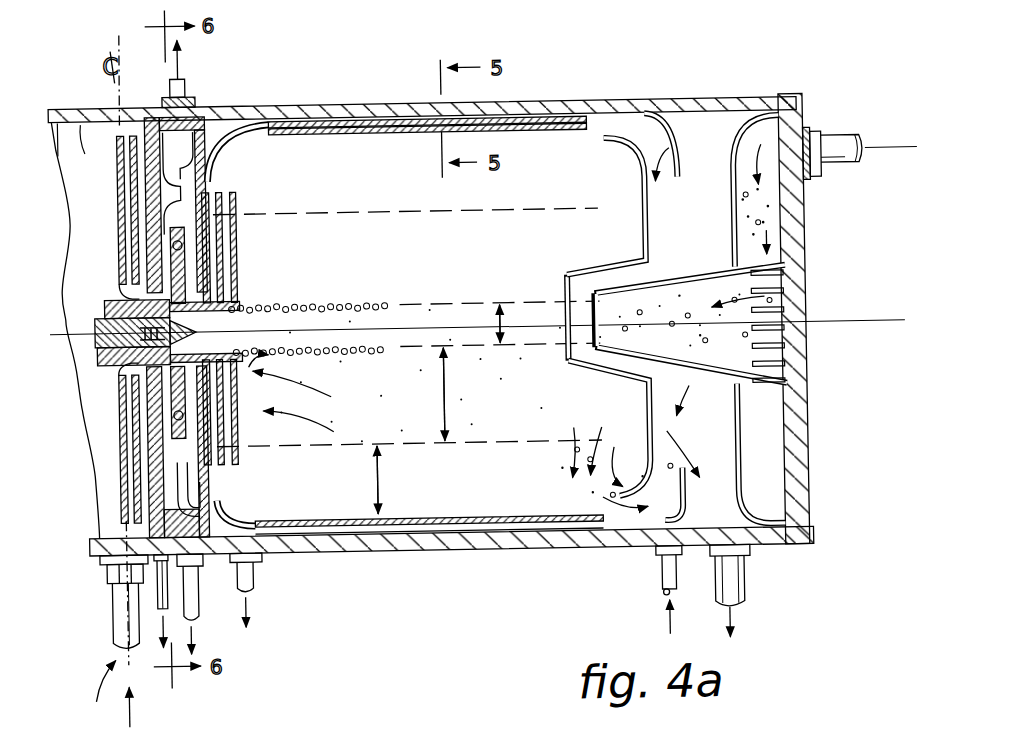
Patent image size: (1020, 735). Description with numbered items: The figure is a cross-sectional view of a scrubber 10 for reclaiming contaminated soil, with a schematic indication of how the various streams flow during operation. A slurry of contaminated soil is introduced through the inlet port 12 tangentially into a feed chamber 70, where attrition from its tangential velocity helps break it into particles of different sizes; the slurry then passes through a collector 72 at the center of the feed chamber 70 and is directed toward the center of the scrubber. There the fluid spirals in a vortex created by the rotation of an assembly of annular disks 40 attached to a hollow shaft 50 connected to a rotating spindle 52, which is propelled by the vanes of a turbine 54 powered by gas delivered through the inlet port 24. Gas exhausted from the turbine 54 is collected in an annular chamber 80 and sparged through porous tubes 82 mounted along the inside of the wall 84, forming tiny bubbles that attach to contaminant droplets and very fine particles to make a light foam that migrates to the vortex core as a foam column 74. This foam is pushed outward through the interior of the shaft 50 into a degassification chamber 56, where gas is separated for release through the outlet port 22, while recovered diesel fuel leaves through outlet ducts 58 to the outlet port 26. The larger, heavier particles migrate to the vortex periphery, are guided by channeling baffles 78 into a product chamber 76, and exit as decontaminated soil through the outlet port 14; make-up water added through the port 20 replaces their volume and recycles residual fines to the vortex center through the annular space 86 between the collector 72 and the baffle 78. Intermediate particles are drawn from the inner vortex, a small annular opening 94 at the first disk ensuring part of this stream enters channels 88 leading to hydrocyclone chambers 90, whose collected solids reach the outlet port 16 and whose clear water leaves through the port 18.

The scrubber 10 is at (602, 92).
The inlet port 12 is at (843, 141).
The outlet port 14 is at (742, 590).
The outlet port 16 is at (156, 580).
The port 18 is at (196, 598).
The port 20 is at (651, 572).
The outlet port 22 is at (249, 582).
The inlet port 24 is at (108, 629).
The outlet port 26 is at (190, 90).
The annular disks 40 is at (237, 200).
The hollow shaft 50 is at (241, 300).
The rotating spindle 52 is at (107, 300).
The turbine 54 is at (123, 446).
The degassification chamber 56 is at (188, 262).
The outlet ducts 58 is at (185, 240).
The feed chamber 70 is at (765, 442).
The collector 72 is at (694, 370).
The foam column 74 is at (418, 318).
The product chamber 76 is at (706, 541).
The channeling baffles 78 is at (680, 155).
The annular chamber 80 is at (226, 128).
The porous tubes 82 is at (402, 130).
The wall 84 is at (473, 548).
The annular space 86 is at (592, 353).
The channels 88 is at (197, 498).
The hydrocyclone chambers 90 is at (173, 478).
The annular opening 94 is at (206, 188).